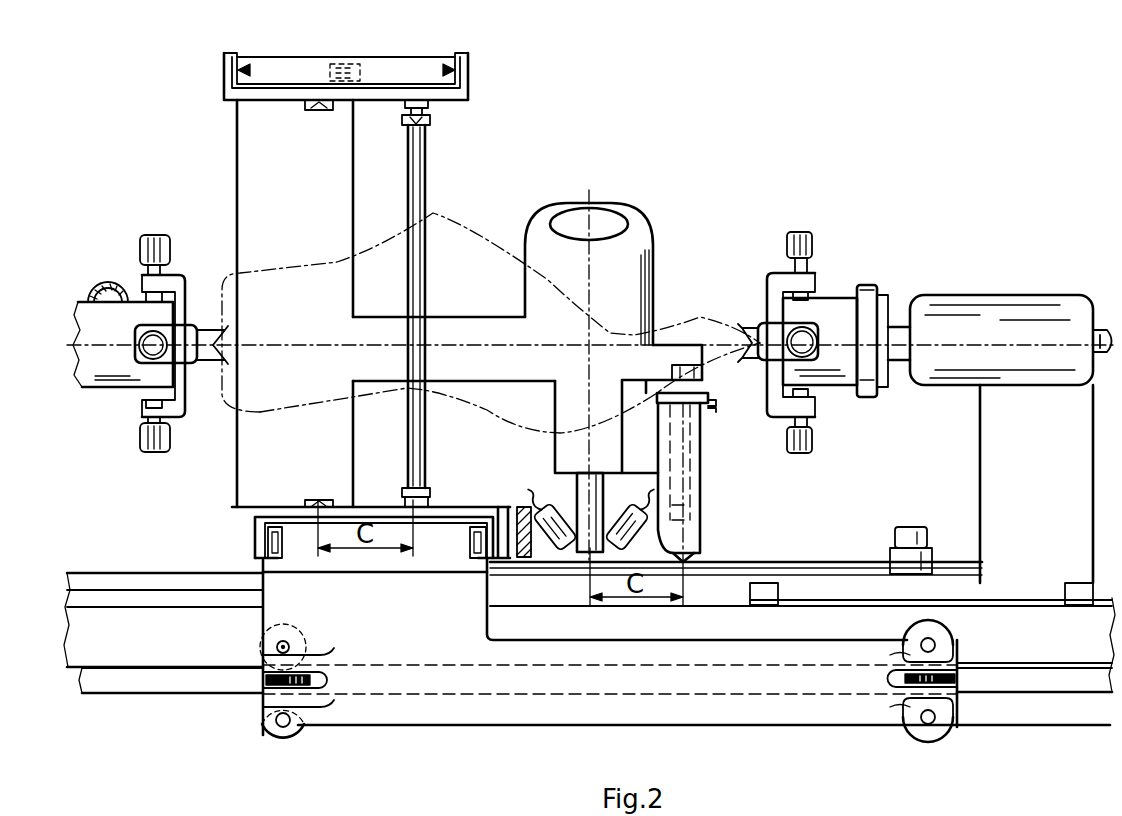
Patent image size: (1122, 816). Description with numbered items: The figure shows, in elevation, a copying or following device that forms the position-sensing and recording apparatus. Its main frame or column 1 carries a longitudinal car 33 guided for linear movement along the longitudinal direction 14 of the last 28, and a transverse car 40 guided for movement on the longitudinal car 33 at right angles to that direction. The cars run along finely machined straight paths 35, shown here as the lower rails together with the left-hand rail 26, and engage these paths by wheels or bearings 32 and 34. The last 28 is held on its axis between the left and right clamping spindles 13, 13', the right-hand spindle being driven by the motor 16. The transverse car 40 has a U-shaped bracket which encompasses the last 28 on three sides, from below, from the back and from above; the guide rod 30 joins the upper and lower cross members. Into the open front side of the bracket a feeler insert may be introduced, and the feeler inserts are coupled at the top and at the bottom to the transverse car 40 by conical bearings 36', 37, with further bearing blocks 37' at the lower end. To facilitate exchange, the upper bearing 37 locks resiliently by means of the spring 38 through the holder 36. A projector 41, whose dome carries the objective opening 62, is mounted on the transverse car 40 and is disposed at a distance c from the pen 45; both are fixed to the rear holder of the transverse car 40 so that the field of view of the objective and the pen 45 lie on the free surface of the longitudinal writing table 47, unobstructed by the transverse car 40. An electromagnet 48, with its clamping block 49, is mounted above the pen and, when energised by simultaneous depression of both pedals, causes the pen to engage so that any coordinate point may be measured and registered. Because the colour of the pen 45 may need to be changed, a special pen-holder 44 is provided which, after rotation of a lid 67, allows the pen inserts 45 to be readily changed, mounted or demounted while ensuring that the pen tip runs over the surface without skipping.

The column 1 is at (237, 152).
The left clamping spindle 13 is at (150, 338).
The right clamping spindle 13' is at (813, 341).
The longitudinal direction 14 is at (326, 345).
The drive motor 16 is at (942, 290).
The left guide rail 26 is at (78, 698).
The last 28 is at (322, 306).
The guide rod 30 is at (428, 190).
The wheels or bearings 32 is at (268, 538).
The longitudinal car 33 is at (838, 727).
The wheels or bearings 34 is at (262, 658).
The straight paths 35 is at (1040, 680).
The holder 36 is at (377, 76).
The conical bearing 36' is at (348, 529).
The conical bearing 37 is at (396, 128).
The lower bearing blocks 37' is at (391, 472).
The spring 38 is at (364, 71).
The transverse car 40 is at (233, 270).
The projector 41 is at (666, 262).
The pen-holder 44 is at (698, 484).
The pen 45 is at (690, 538).
The writing table 47 is at (770, 556).
The electromagnet 48 is at (672, 350).
The clamping block 49 is at (703, 372).
The dome opening 62 is at (610, 226).
The lid 67 is at (708, 398).